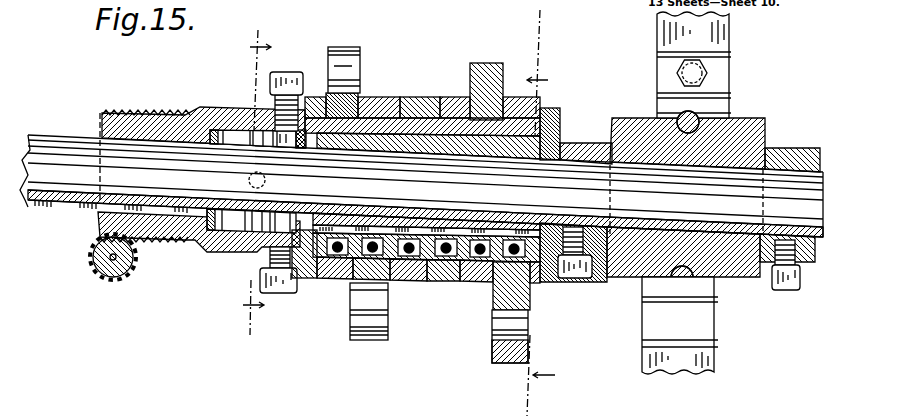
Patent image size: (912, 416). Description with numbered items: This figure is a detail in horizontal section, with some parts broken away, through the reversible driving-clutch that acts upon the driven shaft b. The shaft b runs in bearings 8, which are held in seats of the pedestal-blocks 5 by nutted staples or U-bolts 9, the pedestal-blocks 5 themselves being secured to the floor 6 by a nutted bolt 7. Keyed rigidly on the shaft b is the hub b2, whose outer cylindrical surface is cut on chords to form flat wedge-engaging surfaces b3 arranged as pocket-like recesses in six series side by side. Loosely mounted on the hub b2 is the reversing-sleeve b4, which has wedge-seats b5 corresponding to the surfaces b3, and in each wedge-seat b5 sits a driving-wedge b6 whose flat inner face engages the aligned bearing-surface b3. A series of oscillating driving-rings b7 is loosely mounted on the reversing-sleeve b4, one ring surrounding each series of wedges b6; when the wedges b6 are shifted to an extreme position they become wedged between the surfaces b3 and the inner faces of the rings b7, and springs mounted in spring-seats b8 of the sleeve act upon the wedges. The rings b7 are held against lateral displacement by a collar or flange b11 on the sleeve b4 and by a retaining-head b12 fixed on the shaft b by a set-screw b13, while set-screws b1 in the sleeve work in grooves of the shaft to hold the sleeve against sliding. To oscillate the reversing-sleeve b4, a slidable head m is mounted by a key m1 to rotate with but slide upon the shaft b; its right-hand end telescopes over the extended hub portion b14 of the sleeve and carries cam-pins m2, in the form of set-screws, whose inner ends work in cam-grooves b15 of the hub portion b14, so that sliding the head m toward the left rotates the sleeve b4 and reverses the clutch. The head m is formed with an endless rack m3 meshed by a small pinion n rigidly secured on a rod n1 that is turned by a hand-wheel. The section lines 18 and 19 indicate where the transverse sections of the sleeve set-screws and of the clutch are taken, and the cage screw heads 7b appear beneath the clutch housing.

The driven shaft b is at (633, 180).
The set-screw b1 is at (351, 46).
The hub b2 is at (438, 132).
The wedge-engaging surfaces b3 is at (512, 247).
The reversing-sleeve b4 is at (413, 118).
The wedge-seats b5 is at (537, 282).
The driving-wedges b6 is at (450, 283).
The oscillating driving-rings b7 is at (473, 283).
The spring-seats b8 is at (335, 278).
The collar or flange b11 is at (323, 93).
The retaining-head b12 is at (560, 107).
The set-screw b13 is at (578, 278).
The extended hub portion b14 is at (214, 128).
The cam-grooves b15 is at (230, 213).
The slidable head m is at (203, 243).
The key m1 is at (52, 210).
The cam-pins m2 is at (268, 106).
The rack m3 is at (155, 112).
The pinion n is at (93, 272).
The rod n1 is at (117, 285).
The pedestal-blocks 5 is at (720, 108).
The floor 6 is at (731, 24).
The nutted bolt 7 is at (688, 72).
The cage screw head 7b is at (375, 333).
The bearings 8 is at (748, 278).
The nutted staples or U-bolts 9 is at (727, 118).
The section line x18 18 is at (257, 180).
The section line x19 19 is at (534, 213).